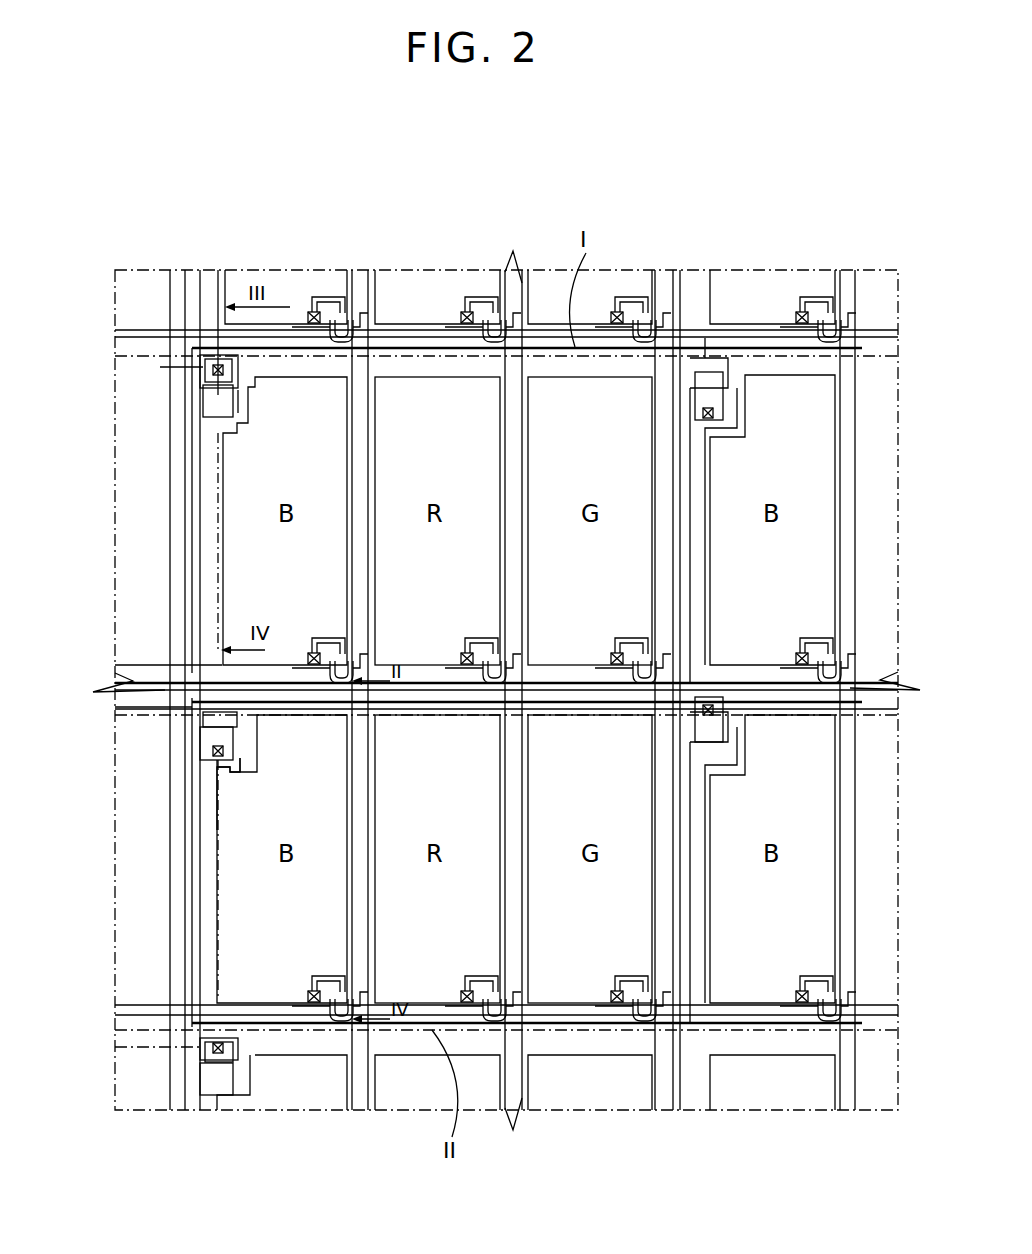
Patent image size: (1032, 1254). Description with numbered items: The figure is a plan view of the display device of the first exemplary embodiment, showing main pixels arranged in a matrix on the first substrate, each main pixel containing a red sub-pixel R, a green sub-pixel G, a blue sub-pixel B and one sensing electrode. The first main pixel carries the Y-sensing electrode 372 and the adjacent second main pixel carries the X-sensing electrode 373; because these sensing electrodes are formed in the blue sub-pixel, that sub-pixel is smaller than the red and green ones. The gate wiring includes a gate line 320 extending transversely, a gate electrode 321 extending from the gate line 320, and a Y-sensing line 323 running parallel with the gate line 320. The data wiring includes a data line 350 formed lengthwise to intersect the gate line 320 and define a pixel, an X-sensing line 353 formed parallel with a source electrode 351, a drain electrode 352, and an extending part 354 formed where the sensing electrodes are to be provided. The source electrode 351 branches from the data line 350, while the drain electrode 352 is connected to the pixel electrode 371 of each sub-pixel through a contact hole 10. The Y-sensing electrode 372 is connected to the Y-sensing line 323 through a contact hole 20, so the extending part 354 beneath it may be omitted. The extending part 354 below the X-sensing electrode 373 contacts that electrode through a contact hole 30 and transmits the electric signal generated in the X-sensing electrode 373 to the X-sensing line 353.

The contact hole 10 is at (190, 683).
The contact hole 20 is at (203, 405).
The contact hole 30 is at (233, 780).
The gate line 320 is at (123, 336).
The gate electrode 321 is at (332, 672).
The Y-sensing line 323 is at (200, 370).
The data line 350 is at (366, 275).
The source electrode 351 is at (213, 756).
The drain electrode 352 is at (296, 652).
The X-sensing line 353 is at (214, 276).
The extending part 354 is at (238, 428).
The pixel electrode 371 is at (222, 512).
The Y-sensing electrode 372 is at (205, 417).
The X-sensing electrode 373 is at (200, 765).